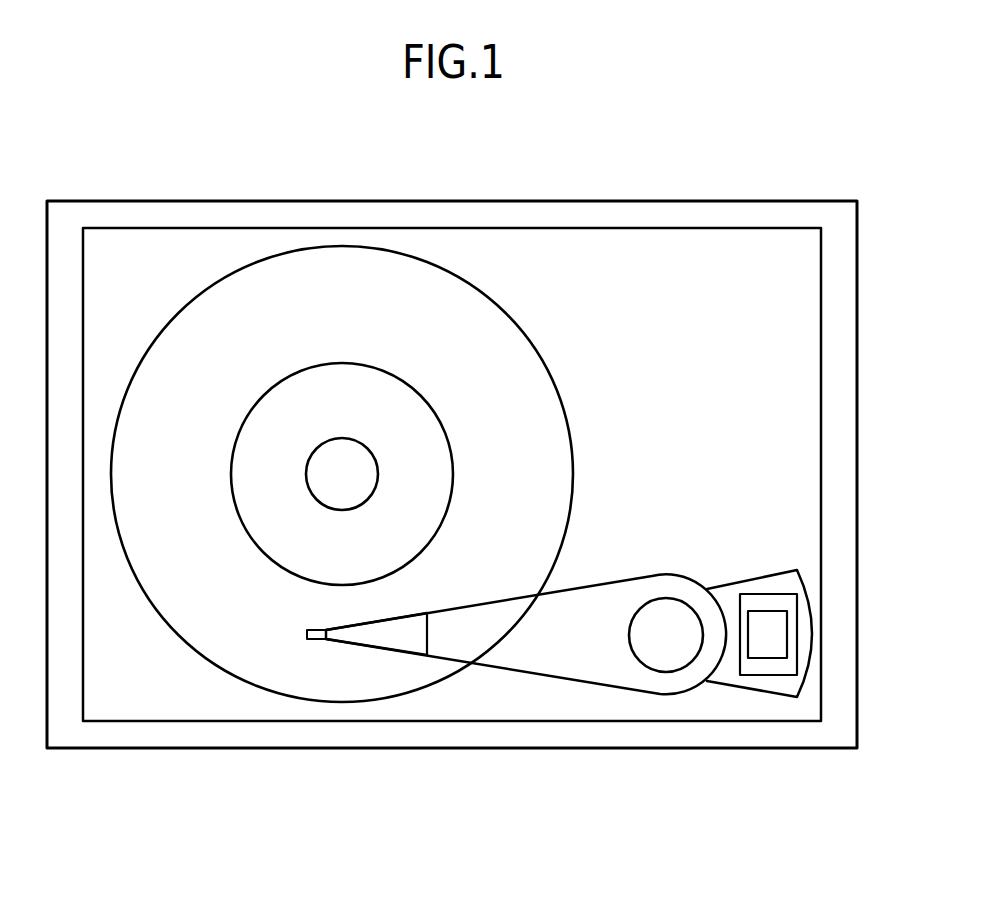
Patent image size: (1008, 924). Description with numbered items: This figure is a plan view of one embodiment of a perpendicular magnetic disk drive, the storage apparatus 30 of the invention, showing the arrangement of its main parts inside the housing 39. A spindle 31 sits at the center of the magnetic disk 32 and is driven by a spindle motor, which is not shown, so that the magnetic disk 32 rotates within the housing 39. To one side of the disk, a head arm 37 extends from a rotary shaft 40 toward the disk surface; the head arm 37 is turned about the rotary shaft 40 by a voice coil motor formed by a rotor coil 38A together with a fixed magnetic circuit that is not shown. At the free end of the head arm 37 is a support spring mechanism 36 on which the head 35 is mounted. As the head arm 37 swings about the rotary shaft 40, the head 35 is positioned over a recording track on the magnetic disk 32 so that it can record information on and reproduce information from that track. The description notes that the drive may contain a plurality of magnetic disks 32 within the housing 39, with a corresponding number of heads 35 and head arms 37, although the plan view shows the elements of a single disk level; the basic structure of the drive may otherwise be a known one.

The magnetic disk drive (HDD) 30 is at (771, 195).
The spindle 31 is at (437, 413).
The magnetic disk 32 is at (563, 401).
The head 35 is at (307, 634).
The support spring mechanism 36 is at (364, 645).
The head arm 37 is at (529, 667).
The voice coil motor 38A is at (763, 592).
The housing 39 is at (599, 740).
The rotary shaft 40 is at (654, 598).